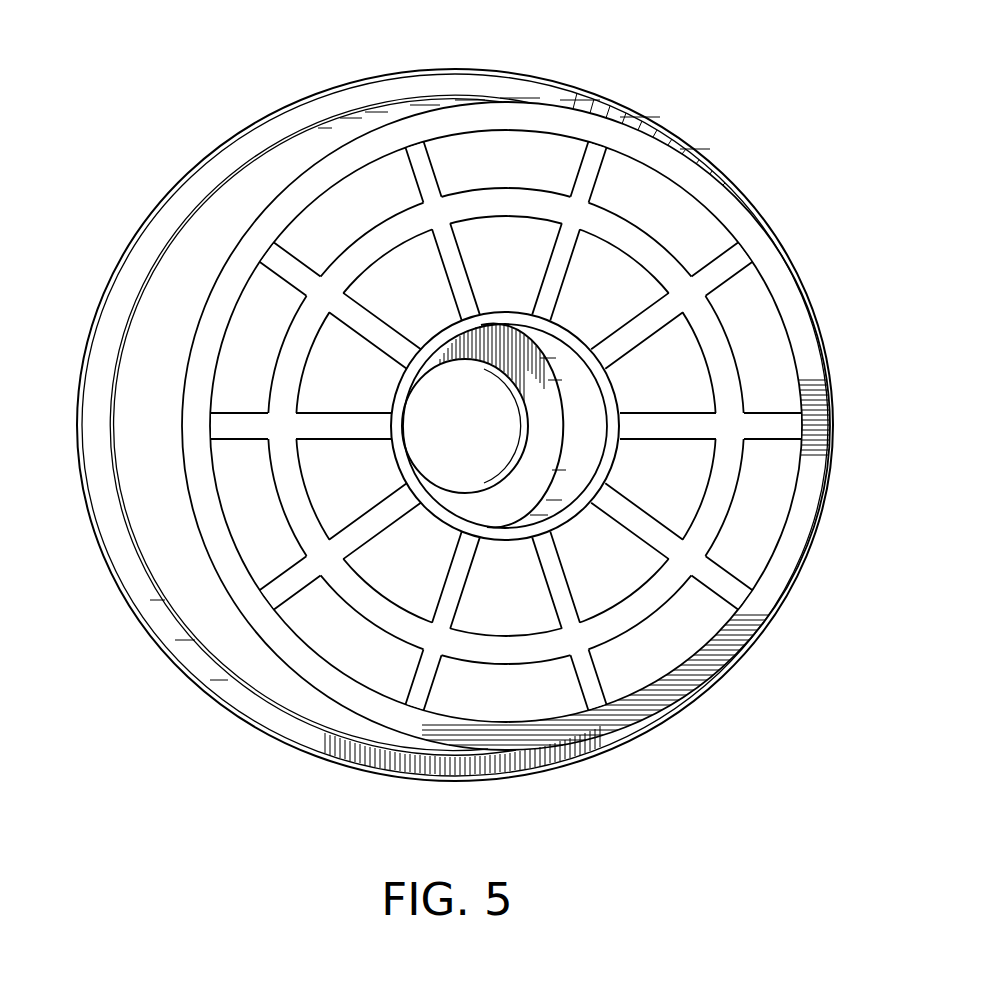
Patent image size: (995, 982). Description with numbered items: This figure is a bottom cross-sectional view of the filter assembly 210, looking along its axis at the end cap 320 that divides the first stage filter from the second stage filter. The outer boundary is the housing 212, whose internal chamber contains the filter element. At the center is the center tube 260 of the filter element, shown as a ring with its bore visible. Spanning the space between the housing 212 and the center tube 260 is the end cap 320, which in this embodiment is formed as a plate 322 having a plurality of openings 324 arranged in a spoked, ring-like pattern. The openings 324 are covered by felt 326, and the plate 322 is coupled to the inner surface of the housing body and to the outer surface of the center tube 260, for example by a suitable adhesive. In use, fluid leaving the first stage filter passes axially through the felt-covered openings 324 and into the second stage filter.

The filter assembly 210 is at (732, 98).
The housing 212 is at (326, 135).
The center tube 260 is at (610, 400).
The end cap 320 is at (706, 664).
The plate 322 is at (413, 718).
The openings 324 is at (312, 652).
The felt 326 is at (237, 507).